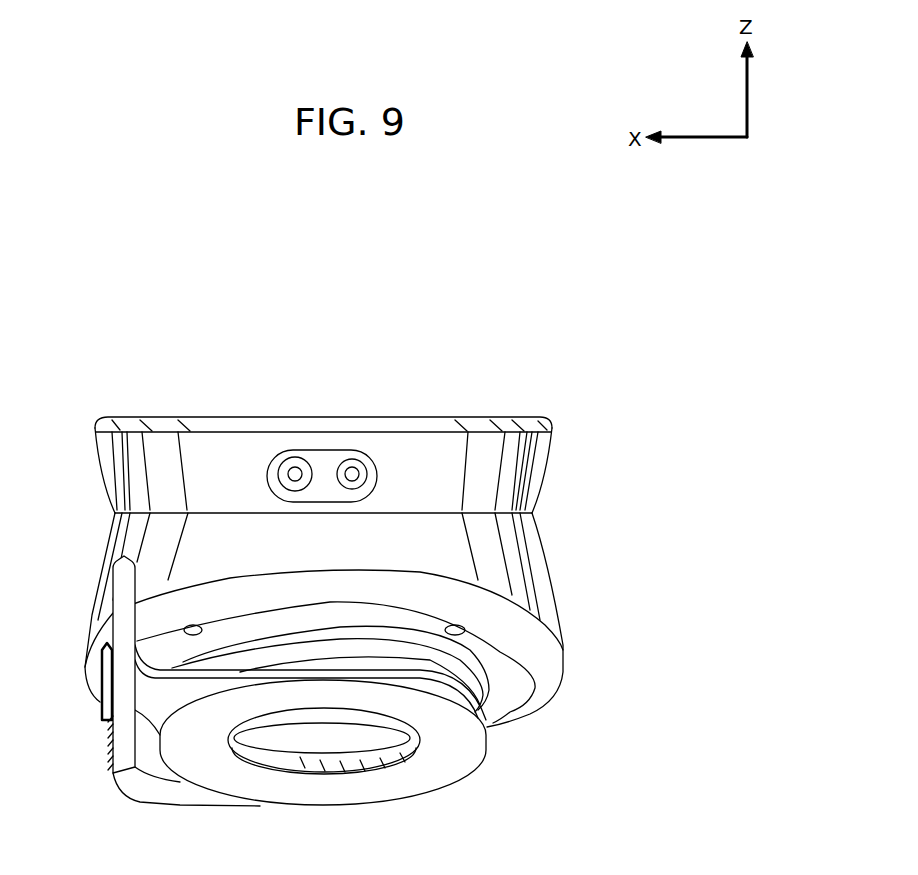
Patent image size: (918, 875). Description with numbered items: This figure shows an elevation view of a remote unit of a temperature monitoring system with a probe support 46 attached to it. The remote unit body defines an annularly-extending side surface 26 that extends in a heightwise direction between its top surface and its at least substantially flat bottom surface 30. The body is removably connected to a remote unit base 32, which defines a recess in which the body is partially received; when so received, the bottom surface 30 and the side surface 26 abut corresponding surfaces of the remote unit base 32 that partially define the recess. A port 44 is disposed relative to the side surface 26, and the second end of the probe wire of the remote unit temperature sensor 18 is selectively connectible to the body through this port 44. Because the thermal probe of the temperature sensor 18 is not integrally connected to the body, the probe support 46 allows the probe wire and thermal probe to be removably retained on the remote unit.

The remote unit temperature sensor 18 is at (120, 580).
The side surface 26 is at (538, 466).
The remote unit base 32 is at (547, 571).
The bottom surface 30 is at (547, 673).
The port 44 is at (296, 470).
The probe support 46 is at (470, 773).